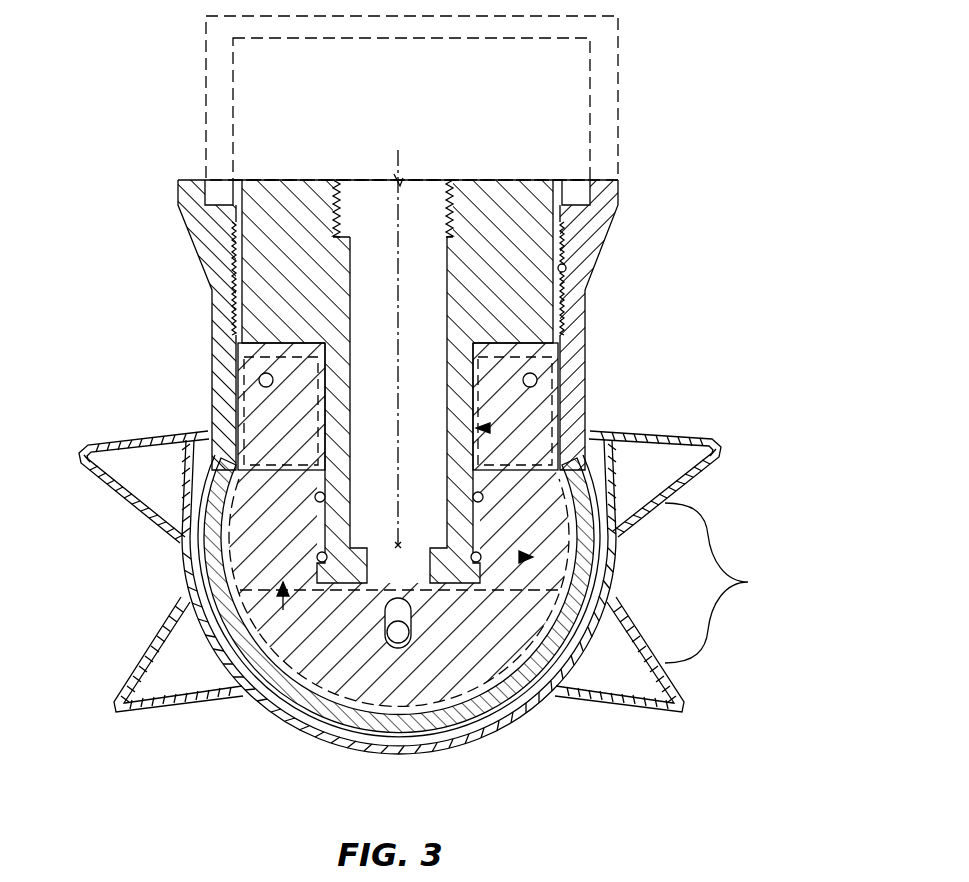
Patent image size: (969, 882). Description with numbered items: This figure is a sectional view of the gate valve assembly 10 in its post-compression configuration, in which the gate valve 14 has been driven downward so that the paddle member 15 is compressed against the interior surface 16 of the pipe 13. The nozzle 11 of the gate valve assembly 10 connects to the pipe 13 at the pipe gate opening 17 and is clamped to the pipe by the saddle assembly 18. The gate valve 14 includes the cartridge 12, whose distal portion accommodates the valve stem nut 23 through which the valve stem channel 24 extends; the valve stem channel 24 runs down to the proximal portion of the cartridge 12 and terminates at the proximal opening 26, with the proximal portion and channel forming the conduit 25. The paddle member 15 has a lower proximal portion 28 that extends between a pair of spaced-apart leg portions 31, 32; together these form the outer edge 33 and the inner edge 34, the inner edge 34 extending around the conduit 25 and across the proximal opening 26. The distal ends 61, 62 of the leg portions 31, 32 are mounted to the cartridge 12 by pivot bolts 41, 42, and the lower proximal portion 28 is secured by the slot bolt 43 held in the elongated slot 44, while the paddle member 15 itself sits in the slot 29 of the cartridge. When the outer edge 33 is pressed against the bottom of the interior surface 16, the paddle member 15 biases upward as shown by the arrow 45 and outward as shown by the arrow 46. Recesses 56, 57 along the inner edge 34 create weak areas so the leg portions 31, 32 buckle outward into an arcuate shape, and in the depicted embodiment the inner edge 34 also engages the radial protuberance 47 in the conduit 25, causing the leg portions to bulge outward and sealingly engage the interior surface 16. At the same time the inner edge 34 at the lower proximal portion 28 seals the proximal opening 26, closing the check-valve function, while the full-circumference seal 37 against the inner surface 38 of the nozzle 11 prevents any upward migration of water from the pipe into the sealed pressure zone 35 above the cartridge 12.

The gate valve assembly 10 is at (128, 216).
The nozzle 11 is at (205, 355).
The cartridge 12 is at (248, 178).
The pipe 13 is at (200, 553).
The gate valve 14 is at (507, 190).
The paddle member 15 is at (278, 688).
The interior surface 16 is at (510, 726).
The pipe gate opening 17 is at (205, 436).
The saddle assembly 18 is at (445, 571).
The valve stem nut 23 is at (333, 200).
The valve stem channel 24 is at (442, 240).
The conduit 25 is at (488, 428).
The proximal opening 26 is at (380, 607).
The lower proximal portion 28 is at (432, 693).
The slot 29 is at (470, 372).
The leg portion 31 is at (258, 442).
The leg portion 32 is at (535, 405).
The outer edge 33 is at (305, 675).
The inner edge 34 is at (292, 428).
The sealed pressure zone 35 is at (393, 96).
The 360° seal 37 is at (232, 184).
The inner surface 38 is at (566, 268).
The pivot bolt 41 is at (240, 345).
The pivot bolt 42 is at (537, 380).
The slot bolt 43 is at (398, 632).
The elongated slot 44 is at (490, 590).
The arrow 45 is at (287, 606).
The arrow 46 is at (497, 557).
The radial protuberance 47 is at (310, 517).
The recess 56 is at (305, 500).
The recess 57 is at (480, 525).
The distal end 61 is at (270, 333).
The distal end 62 is at (503, 343).